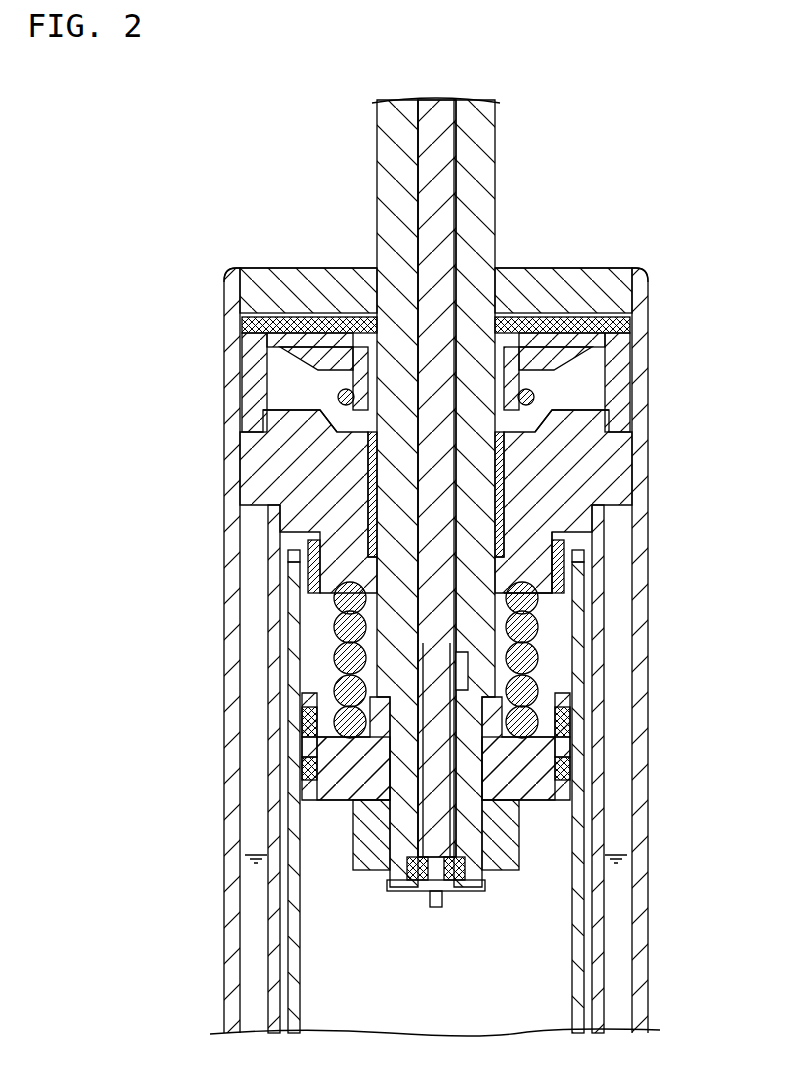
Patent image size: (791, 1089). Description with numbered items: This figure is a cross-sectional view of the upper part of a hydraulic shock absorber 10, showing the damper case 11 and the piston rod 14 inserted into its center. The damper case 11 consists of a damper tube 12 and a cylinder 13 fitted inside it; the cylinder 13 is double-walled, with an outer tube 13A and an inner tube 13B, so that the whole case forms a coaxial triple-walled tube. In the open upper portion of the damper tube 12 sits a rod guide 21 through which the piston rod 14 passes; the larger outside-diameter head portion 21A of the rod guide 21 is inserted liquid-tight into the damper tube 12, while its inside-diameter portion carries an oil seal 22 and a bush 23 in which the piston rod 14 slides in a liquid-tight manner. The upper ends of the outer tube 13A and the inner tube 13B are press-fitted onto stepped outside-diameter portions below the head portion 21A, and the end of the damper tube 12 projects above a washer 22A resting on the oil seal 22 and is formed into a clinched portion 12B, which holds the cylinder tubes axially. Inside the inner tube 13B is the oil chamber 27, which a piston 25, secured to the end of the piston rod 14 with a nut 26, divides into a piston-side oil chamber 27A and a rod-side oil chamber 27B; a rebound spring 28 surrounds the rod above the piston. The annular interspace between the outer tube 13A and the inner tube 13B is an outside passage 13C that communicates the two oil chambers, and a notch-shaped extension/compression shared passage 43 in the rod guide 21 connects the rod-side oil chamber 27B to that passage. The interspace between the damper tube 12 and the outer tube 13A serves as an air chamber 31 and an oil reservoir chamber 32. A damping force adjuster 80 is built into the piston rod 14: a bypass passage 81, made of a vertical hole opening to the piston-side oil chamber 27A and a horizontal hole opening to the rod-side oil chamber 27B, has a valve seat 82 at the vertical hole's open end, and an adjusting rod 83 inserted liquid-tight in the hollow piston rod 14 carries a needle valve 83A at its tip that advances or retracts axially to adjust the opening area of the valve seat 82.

The hydraulic shock absorber 10 is at (196, 266).
The damper case 11 is at (224, 411).
The damper tube 12 is at (240, 437).
The clinched portion 12B is at (240, 266).
The cylinder 13 is at (300, 638).
The outer tube 13A is at (303, 658).
The inner tube 13B is at (303, 690).
The outside passage 13C is at (303, 712).
The piston rod 14 is at (388, 100).
The rod guide 21 is at (285, 478).
The head portion 21A is at (283, 462).
The oil seal 22 is at (240, 368).
The washer 22A is at (345, 269).
The bush 23 is at (302, 520).
The piston 25 is at (318, 772).
The nut 26 is at (355, 830).
The oil chamber 27 is at (522, 920).
The piston-side oil chamber 27A is at (522, 958).
The rod-side oil chamber 27B is at (553, 617).
The rebound spring 28 is at (553, 645).
The air chamber 31 is at (288, 590).
The oil reservoir chamber 32 is at (250, 935).
The extension/compression shared passage 43 is at (303, 563).
The damping force adjuster 80 is at (438, 104).
The bypass passage 81 is at (553, 668).
The valve seat 82 is at (418, 880).
The adjusting rod 83 is at (445, 160).
The needle valve 83A is at (437, 907).